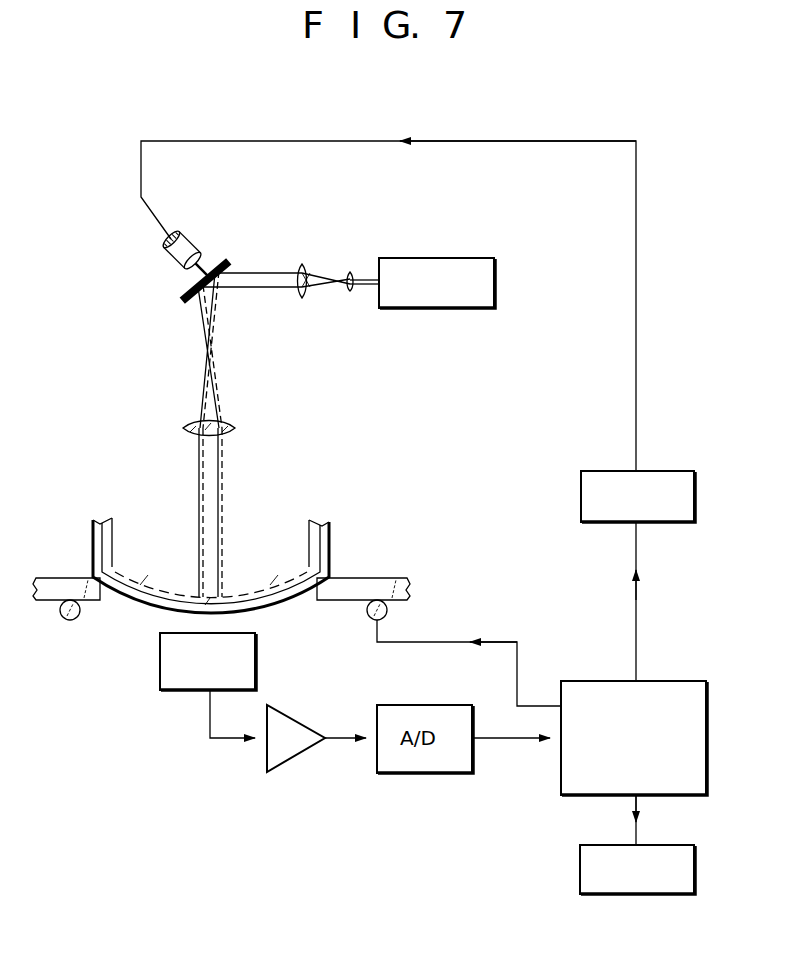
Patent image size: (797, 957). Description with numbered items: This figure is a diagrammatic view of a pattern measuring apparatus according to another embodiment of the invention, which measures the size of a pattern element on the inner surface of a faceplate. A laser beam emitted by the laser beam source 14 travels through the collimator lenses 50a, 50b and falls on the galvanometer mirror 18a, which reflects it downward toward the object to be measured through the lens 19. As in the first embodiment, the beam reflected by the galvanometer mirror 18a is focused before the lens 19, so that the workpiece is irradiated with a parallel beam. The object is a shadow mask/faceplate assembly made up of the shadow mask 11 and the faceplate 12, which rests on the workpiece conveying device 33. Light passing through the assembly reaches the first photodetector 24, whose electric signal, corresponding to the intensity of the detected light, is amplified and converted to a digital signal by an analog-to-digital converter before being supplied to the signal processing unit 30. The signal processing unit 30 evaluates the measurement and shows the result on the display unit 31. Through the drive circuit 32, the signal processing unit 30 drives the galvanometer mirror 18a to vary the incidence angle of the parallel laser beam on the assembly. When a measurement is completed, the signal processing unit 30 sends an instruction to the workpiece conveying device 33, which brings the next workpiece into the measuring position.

The laser beam source 14 is at (440, 258).
The galvanometer mirror 18a is at (221, 262).
The collimator lens 50b is at (302, 264).
The collimator lens 50a is at (350, 271).
The lens 19 is at (236, 428).
The shadow mask 11 is at (312, 529).
The faceplate 12 is at (331, 541).
The workpiece conveying device 33 is at (386, 578).
The first photodetector 24 is at (256, 665).
The signal processing unit 30 is at (670, 680).
The drive circuit 32 is at (665, 471).
The display unit 31 is at (637, 895).